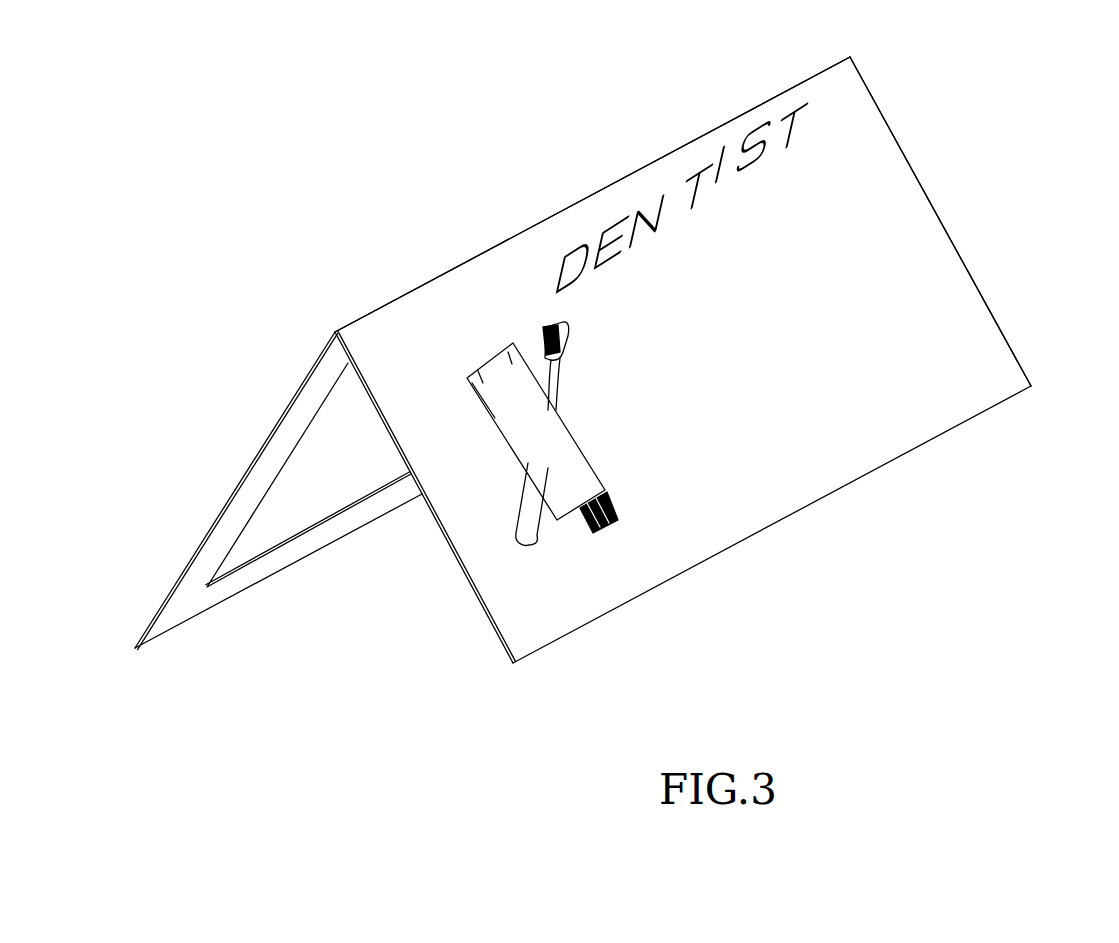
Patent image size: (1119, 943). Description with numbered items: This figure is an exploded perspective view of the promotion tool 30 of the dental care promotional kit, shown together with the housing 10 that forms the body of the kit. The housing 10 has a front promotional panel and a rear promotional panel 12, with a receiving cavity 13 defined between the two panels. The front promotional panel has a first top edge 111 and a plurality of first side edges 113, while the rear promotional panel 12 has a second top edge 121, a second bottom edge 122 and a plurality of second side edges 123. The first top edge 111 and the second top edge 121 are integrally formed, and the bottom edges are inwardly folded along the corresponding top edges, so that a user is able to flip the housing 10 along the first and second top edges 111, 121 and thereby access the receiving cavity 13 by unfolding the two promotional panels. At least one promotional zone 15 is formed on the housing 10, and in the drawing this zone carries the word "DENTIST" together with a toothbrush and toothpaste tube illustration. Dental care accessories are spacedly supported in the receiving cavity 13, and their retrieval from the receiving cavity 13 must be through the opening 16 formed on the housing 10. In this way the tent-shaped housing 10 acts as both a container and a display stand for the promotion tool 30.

The housing 10 is at (672, 118).
The rear promotional panel 12 is at (947, 357).
The second top edge 121 is at (812, 95).
The second bottom edge 122 is at (778, 525).
The second side edges 123 is at (940, 213).
The first top edge 111 is at (418, 283).
The first side edges 113 is at (225, 500).
The receiving cavity 13 is at (352, 608).
The opening 16 is at (262, 657).
The promotional zone 15 is at (590, 223).
The promotion tool 30 is at (923, 82).